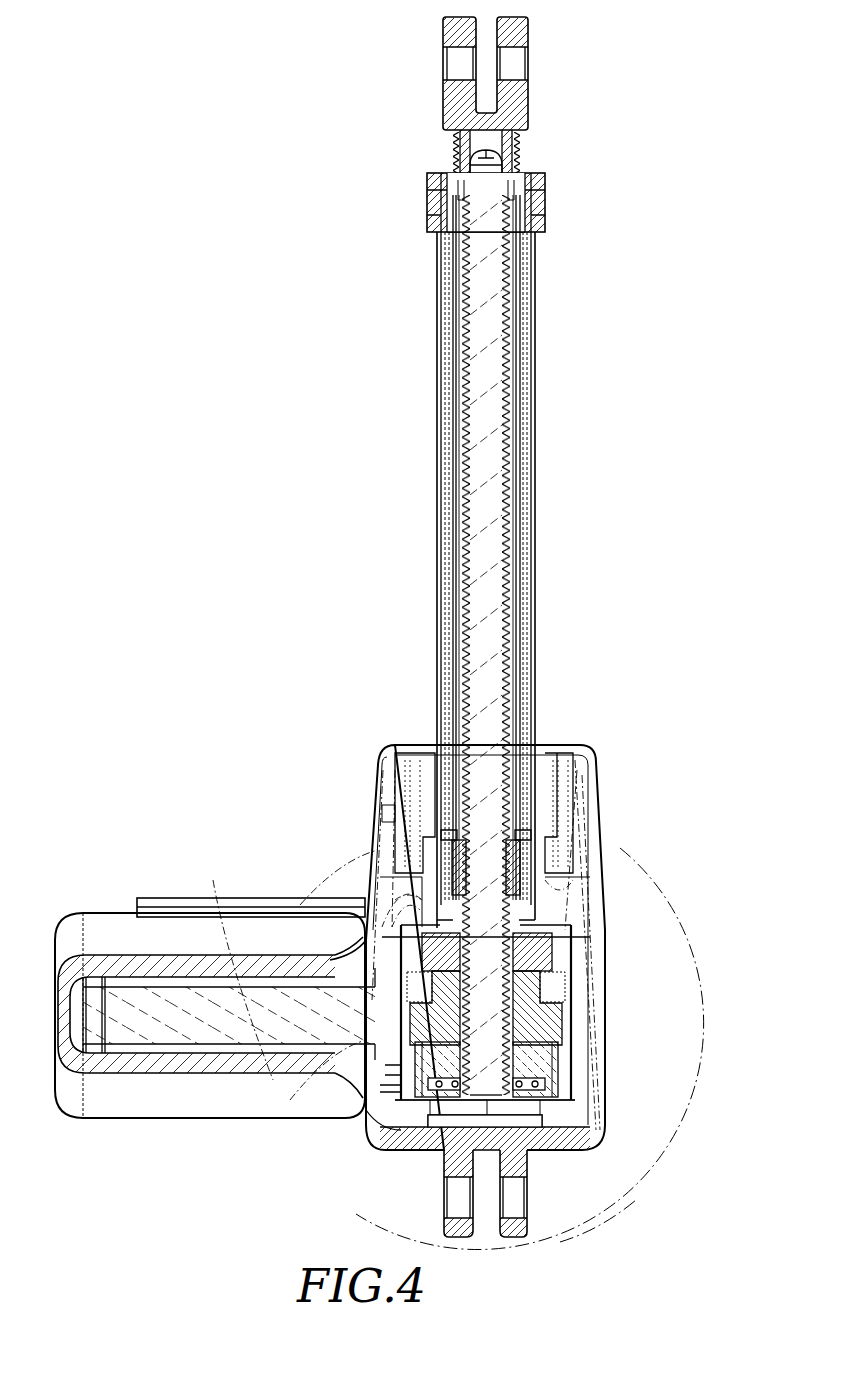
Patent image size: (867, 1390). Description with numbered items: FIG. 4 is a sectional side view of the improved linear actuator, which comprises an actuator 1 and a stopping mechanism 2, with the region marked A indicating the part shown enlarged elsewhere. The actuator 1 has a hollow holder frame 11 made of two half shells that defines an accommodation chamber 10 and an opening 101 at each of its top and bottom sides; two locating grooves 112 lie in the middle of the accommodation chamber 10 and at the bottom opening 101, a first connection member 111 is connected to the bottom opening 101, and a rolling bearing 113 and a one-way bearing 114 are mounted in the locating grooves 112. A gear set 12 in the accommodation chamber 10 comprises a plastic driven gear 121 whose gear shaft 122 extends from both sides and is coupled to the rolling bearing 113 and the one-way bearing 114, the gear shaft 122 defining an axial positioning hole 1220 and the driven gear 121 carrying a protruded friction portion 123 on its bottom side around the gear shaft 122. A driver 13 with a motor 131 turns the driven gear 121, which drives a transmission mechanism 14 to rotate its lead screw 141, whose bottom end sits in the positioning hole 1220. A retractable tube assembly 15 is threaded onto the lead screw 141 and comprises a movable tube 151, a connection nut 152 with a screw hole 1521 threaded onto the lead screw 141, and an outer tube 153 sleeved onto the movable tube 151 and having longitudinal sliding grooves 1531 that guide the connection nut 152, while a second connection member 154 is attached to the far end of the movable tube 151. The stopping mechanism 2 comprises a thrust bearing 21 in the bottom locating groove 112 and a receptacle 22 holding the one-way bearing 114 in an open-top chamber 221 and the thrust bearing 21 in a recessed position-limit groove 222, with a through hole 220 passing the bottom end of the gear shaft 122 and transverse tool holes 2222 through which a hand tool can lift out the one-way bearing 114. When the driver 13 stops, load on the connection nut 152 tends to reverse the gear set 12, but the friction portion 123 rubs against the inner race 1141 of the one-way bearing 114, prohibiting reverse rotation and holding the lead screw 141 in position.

The actuator 1 is at (665, 790).
The accommodation chamber 10 is at (557, 988).
The opening 101 is at (565, 745).
The hollow holder frame 11 is at (605, 838).
The first connection member 111 is at (566, 1105).
The locating grooves 112 is at (562, 1052).
The rolling bearing 113 is at (563, 933).
The one-way bearing 114 is at (565, 1078).
The inner race 1141 is at (563, 1040).
The gear set 12 is at (290, 828).
The driven gear 121 is at (395, 985).
The gear shaft 122 is at (415, 937).
The positioning hole 1220 is at (465, 887).
The friction portion 123 is at (207, 905).
The driver 13 is at (107, 1174).
The motor 131 is at (113, 1030).
The transmission mechanism 14 is at (612, 491).
The lead screw 141 is at (495, 498).
The retractable tube assembly 15 is at (612, 545).
The movable tube 151 is at (524, 540).
The connection nut 152 is at (340, 718).
The screw hole 1521 is at (452, 748).
The outer tube 153 is at (533, 612).
The longitudinal sliding groove 1531 is at (525, 642).
The second connection member 154 is at (517, 108).
The stopping mechanism 2 is at (612, 1195).
The thrust bearing 21 is at (523, 1096).
The receptacle 22 is at (373, 1115).
The through hole 220 is at (467, 1098).
The open-top chamber 221 is at (367, 1060).
The recessed position-limit groove 222 is at (440, 1103).
The transverse tool holes 2222 is at (432, 1090).
The detail region A is at (655, 895).